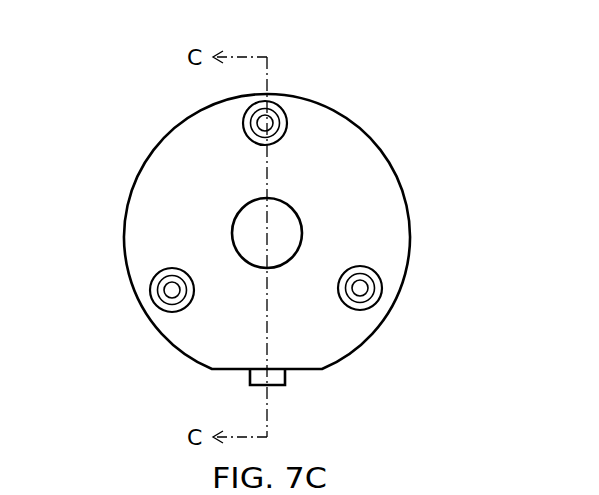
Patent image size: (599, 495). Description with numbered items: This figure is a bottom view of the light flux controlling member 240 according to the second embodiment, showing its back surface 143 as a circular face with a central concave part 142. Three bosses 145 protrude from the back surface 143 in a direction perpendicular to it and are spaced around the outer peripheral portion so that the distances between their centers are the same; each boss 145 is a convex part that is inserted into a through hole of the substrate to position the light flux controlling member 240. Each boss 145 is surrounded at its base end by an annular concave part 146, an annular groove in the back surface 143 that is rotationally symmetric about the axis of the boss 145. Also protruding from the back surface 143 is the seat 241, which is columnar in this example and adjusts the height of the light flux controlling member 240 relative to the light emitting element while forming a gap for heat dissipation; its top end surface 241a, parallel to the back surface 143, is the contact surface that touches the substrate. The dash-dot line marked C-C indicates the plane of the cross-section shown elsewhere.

The light flux controlling member 240 is at (272, 224).
The back surface 143 is at (172, 160).
The concave part 142 is at (245, 238).
The annular concave part 146 is at (283, 124).
The boss 145 is at (277, 112).
The seat 241 is at (270, 124).
The top end surface 241a is at (313, 196).